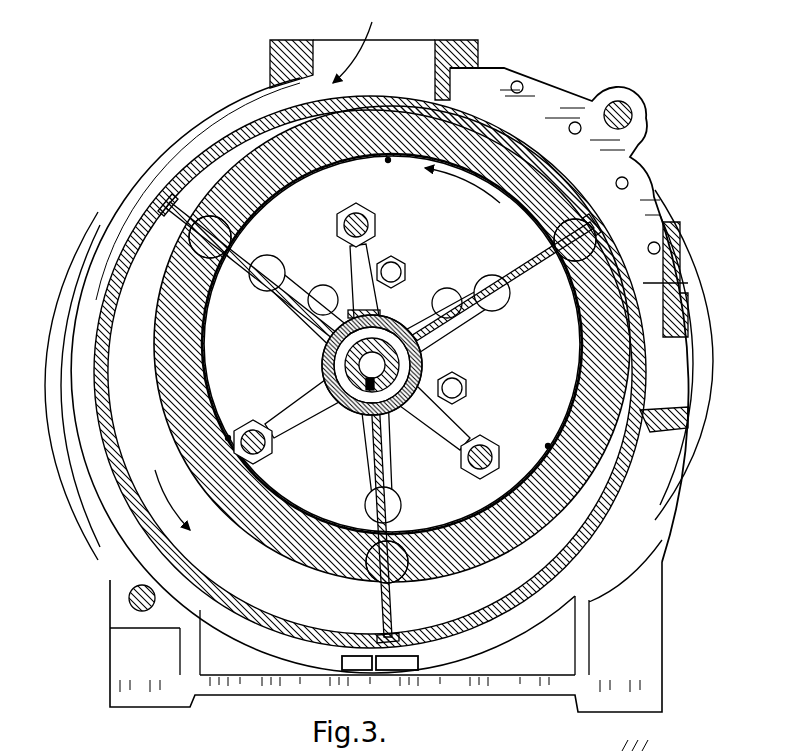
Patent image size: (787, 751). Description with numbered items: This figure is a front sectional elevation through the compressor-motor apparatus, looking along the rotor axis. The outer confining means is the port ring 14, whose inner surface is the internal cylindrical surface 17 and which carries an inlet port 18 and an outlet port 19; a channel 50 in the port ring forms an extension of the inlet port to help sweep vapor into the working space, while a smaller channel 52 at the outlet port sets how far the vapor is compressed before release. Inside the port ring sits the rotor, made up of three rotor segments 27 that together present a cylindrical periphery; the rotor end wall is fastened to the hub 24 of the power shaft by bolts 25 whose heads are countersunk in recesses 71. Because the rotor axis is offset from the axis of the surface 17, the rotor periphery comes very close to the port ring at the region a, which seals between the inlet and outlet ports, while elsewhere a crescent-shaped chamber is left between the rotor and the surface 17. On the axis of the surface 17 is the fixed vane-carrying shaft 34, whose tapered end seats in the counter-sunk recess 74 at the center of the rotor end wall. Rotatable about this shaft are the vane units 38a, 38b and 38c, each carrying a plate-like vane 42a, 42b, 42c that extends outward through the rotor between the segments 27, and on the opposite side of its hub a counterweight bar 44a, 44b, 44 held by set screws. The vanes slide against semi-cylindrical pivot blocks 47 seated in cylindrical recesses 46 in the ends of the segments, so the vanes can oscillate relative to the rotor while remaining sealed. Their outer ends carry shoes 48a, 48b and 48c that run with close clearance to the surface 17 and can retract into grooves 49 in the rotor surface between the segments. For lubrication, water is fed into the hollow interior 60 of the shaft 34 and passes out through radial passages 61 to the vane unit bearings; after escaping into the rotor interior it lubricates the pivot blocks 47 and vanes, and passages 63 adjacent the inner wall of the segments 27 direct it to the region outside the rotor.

The port ring 14 is at (120, 498).
The internal cylindrical surface 17 is at (122, 438).
The inlet port 18 is at (425, 40).
The outlet port 19 is at (690, 395).
The hub of power shaft 24 is at (620, 745).
The bolts 25 is at (380, 292).
The rotor segments 27 is at (257, 342).
The vane-carrying shaft 34 is at (383, 343).
The vane unit 38a is at (406, 500).
The vane unit 38b is at (274, 258).
The vane unit 38c is at (476, 323).
The vane member 42a is at (382, 614).
The vane member 42b is at (184, 236).
The vane member 42c is at (514, 249).
The counterweight bar 44 is at (266, 461).
The counterweight bar 44a is at (370, 223).
The counterweight bar 44b is at (491, 440).
The cylindrical recesses 46 is at (243, 213).
The pivot blocks 47 is at (212, 288).
The shoe 48a is at (392, 635).
The shoe 48b is at (178, 200).
The shoe 48c is at (598, 232).
The grooves 49 is at (190, 256).
The channel 50 is at (190, 148).
The channel 52 is at (620, 468).
The hollow interior 60 is at (343, 364).
The radial passages 61 is at (346, 418).
The passages 63 is at (388, 163).
The recesses 71 is at (408, 268).
The counter-sunk recess 74 is at (436, 364).
The region of the port ring a is at (622, 158).